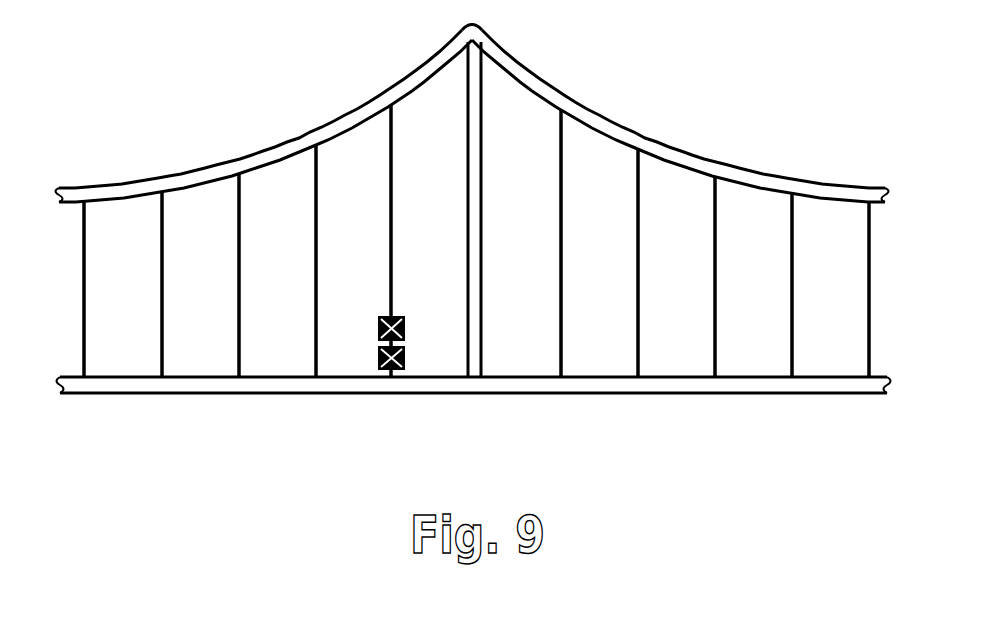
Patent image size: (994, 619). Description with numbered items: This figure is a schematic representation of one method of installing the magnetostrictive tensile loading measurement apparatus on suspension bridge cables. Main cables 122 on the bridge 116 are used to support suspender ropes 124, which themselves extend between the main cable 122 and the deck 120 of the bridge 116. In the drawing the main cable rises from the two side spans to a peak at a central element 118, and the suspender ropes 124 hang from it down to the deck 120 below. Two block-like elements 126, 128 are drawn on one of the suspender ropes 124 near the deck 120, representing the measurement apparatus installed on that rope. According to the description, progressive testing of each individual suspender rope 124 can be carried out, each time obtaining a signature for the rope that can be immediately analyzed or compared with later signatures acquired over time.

The bridge 116 is at (280, 103).
The central post 118 is at (495, 96).
The deck 120 is at (547, 407).
The main cable 122 is at (618, 101).
The suspender rope 124 is at (221, 197).
The upper connector block 126 is at (406, 327).
The lower connector block 128 is at (376, 357).